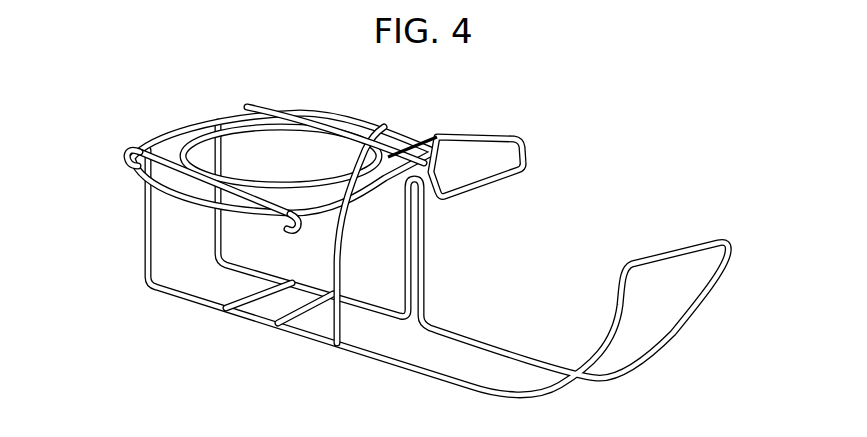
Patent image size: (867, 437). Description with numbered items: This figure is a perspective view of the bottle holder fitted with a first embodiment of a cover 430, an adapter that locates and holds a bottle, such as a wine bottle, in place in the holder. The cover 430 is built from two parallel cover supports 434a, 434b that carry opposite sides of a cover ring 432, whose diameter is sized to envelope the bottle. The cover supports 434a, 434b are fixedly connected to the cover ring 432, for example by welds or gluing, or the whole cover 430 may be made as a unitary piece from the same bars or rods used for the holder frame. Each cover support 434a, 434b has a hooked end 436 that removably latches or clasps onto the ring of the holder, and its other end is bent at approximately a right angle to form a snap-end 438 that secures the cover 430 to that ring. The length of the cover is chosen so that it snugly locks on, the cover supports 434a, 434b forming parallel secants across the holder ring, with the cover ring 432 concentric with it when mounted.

The cover 430 is at (188, 128).
The cover ring 432 is at (243, 126).
The cover support 434a is at (198, 190).
The cover support 434b is at (291, 112).
The hooked end 436 is at (278, 223).
The snap-end 438 is at (123, 175).